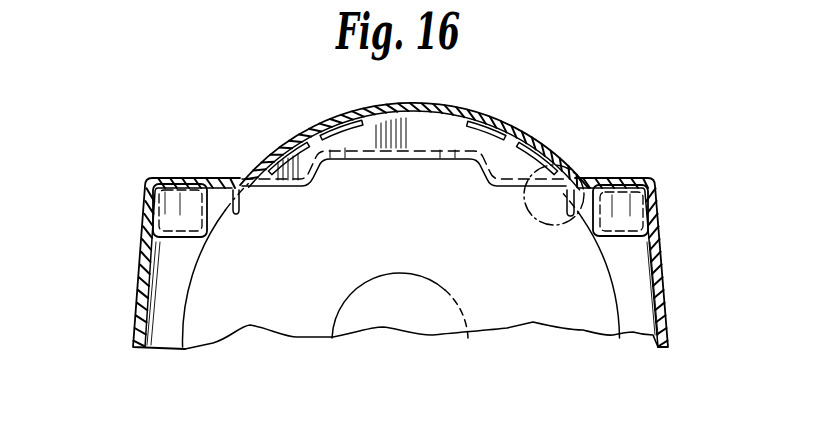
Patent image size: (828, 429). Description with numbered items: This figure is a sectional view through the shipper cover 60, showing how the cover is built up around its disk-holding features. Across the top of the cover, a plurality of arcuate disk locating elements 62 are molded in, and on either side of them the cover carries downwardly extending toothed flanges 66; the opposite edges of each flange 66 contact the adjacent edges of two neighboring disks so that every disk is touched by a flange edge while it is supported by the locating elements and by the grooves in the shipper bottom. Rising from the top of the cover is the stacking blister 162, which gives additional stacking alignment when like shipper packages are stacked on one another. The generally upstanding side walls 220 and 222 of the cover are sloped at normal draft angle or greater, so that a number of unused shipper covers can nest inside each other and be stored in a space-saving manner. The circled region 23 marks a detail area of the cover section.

The shipper cover 60 is at (132, 232).
The disk locating element 62 is at (462, 130).
The stacking blister 162 is at (343, 160).
The detail region / neck 23 is at (575, 160).
The downwardly extending toothed flange 66 is at (243, 205).
The upstanding wall 220 is at (668, 255).
The upstanding wall 222 is at (582, 320).